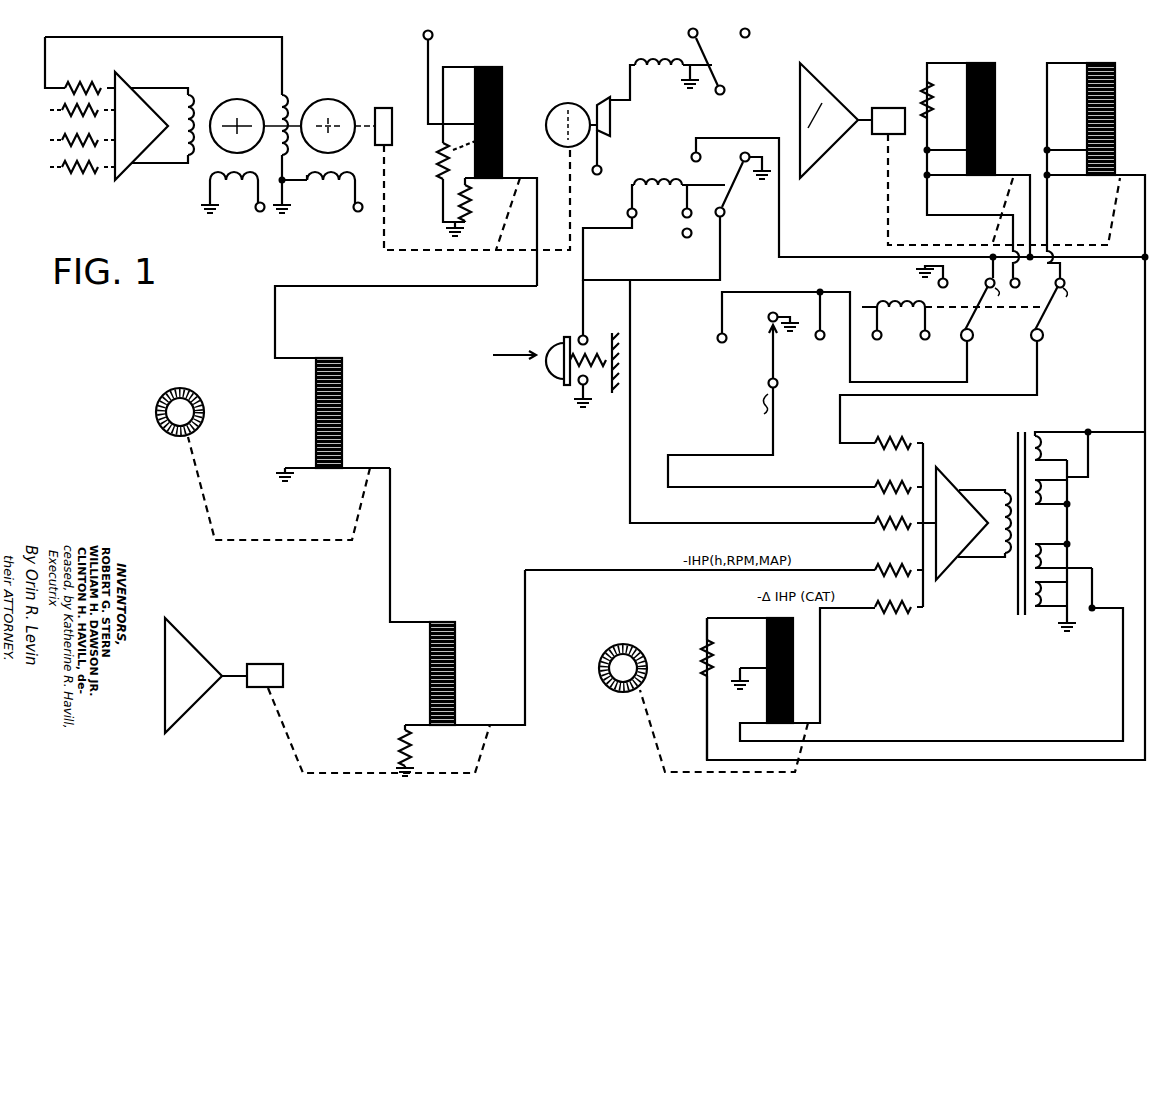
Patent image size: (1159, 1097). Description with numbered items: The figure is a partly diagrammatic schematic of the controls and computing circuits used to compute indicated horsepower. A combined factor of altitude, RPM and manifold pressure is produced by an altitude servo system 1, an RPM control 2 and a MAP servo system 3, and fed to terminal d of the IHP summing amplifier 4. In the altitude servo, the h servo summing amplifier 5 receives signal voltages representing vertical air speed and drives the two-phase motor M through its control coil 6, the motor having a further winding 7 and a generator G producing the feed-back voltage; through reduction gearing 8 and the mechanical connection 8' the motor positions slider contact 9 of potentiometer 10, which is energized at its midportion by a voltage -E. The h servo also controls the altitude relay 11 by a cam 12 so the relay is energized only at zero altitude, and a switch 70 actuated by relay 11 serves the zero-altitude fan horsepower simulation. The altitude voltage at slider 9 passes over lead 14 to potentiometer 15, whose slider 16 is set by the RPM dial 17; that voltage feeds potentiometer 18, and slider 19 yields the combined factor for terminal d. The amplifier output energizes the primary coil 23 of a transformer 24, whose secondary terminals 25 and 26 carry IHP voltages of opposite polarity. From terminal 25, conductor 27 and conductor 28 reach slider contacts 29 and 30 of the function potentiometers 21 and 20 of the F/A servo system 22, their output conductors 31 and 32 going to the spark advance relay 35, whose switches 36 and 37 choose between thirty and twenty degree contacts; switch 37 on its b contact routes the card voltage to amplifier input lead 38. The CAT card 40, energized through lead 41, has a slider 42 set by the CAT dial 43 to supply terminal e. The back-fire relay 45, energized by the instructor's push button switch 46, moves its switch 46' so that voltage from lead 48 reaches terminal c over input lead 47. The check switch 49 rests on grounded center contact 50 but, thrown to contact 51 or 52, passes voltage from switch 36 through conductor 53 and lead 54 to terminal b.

The altitude servo system 1 is at (329, 54).
The RPM control 2 is at (252, 421).
The MAP servo system 3 is at (344, 677).
The IHP summing amplifier 4 is at (945, 482).
The h servo summing amplifier 5 is at (128, 84).
The control coil 6 is at (193, 98).
The generator field winding 7 is at (289, 99).
The reduction gearing 8 is at (383, 110).
The relay coupling 8' is at (477, 197).
The slider contact 9 is at (506, 178).
The potentiometer 10 is at (508, 88).
The altitude relay 11 is at (638, 60).
The cam 12 is at (566, 103).
The lead 14 is at (363, 287).
The potentiometer 15 is at (342, 400).
The slider 16 is at (351, 467).
The dial 17 is at (190, 391).
The potentiometer 18 is at (457, 634).
The slider 19 is at (464, 725).
The function potentiometer 20 is at (976, 63).
The function potentiometer 21 is at (1097, 63).
The F/A servo system 22 is at (880, 66).
The primary coil 23 is at (1004, 488).
The transformer 24 is at (1018, 625).
The terminal 25 is at (1091, 437).
The terminal 26 is at (1092, 613).
The conductor 27 is at (1145, 338).
The conductor 28 is at (1011, 211).
The slider contact 29 is at (1120, 175).
The slider contact 30 is at (998, 175).
The output conductor 31 is at (1050, 240).
The output conductor 32 is at (1012, 232).
The spark advance relay 35 is at (948, 322).
The switch 36 is at (973, 330).
The switch 37 is at (1043, 332).
The amplifier input lead 38 is at (840, 418).
The CAT card 40 is at (767, 633).
The lead 41 is at (962, 741).
The slider 42 is at (798, 718).
The dial 43 is at (616, 648).
The back-fire relay 45 is at (632, 187).
The back-fire push button switch 46 is at (506, 372).
The switch 46' is at (691, 187).
The input lead 47 is at (630, 514).
The lead 48 is at (828, 257).
The check switch 49 is at (776, 340).
The center contact 50 is at (768, 316).
The contact 51 is at (822, 331).
The contact 52 is at (718, 336).
The conductor 53 is at (968, 378).
The lead 54 is at (696, 492).
The switch 70 is at (713, 72).